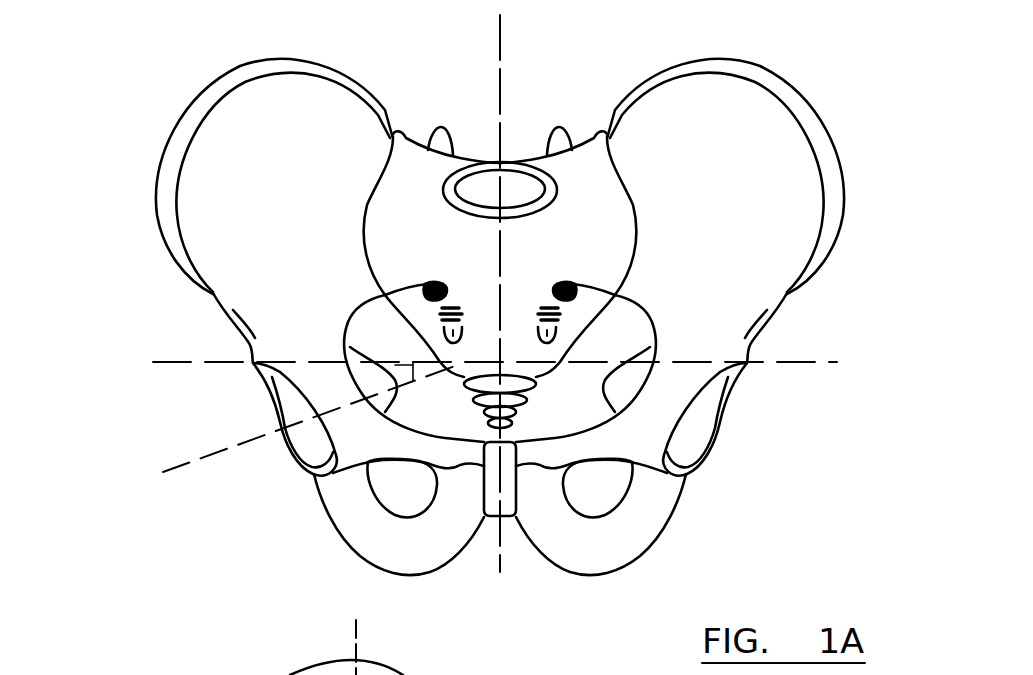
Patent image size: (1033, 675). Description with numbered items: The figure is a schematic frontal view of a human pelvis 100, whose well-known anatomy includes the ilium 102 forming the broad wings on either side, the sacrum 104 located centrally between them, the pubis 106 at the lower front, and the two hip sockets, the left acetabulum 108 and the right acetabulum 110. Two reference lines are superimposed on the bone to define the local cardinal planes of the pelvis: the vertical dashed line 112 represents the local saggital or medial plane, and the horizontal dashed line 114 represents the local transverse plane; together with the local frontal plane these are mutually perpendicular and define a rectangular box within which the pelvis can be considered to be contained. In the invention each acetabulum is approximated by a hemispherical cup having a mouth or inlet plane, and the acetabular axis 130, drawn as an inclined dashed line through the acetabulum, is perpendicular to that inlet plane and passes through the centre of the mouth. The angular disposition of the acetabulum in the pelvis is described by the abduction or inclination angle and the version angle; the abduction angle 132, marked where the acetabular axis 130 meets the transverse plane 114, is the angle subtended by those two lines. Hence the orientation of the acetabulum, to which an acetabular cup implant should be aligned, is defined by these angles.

The pelvis 100 is at (828, 108).
The ilium 102 is at (745, 223).
The sacrum 104 is at (420, 178).
The pubis 106 is at (642, 452).
The left acetabulum 108 is at (708, 430).
The right acetabulum 110 is at (284, 409).
The dashed line representing local saggital plane 112 is at (500, 80).
The dashed line representing local transverse plane 114 is at (167, 362).
The acetabular axis 130 is at (218, 452).
The abduction angle 132 is at (395, 365).